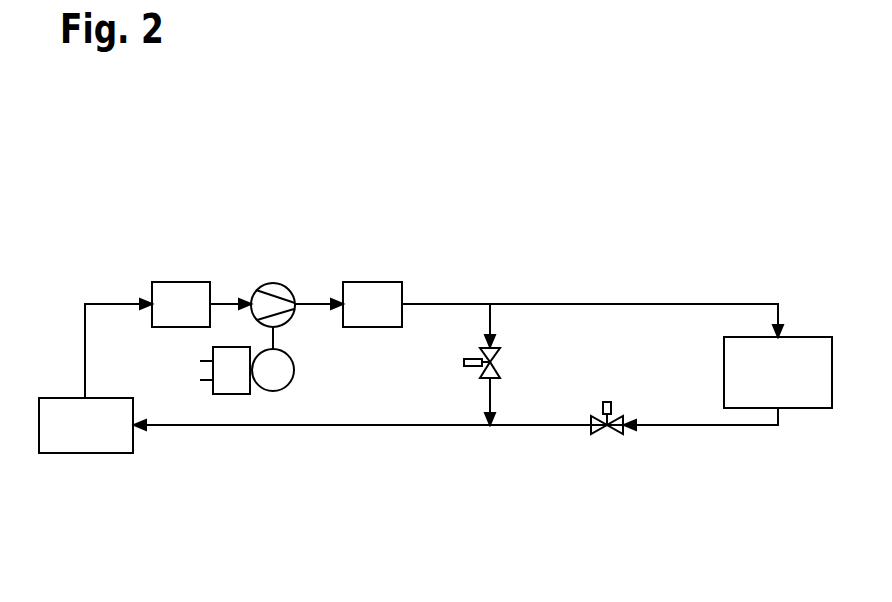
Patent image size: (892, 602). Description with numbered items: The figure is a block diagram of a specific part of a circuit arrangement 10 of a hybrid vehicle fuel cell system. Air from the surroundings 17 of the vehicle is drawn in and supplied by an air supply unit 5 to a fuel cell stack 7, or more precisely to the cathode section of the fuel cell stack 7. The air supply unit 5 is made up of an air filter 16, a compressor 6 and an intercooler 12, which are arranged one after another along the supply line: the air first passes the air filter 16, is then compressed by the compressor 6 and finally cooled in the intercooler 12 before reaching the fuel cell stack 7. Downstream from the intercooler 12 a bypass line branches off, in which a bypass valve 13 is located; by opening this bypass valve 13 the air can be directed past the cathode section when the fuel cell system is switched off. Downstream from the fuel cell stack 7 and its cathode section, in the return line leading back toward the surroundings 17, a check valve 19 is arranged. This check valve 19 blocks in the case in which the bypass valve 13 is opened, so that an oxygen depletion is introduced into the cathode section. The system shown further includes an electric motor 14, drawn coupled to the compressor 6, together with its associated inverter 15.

The circuit arrangement 10 is at (696, 154).
The air supply unit 5 is at (256, 178).
The compressor 6 is at (273, 283).
The fuel cell stack 7 is at (805, 337).
The intercooler 12 is at (372, 282).
The bypass valve 13 is at (497, 372).
The electric motor 14 is at (273, 392).
The inverter 15 is at (232, 394).
The air filter 16 is at (178, 282).
The surroundings 17 is at (67, 453).
The check valve 19 is at (607, 435).